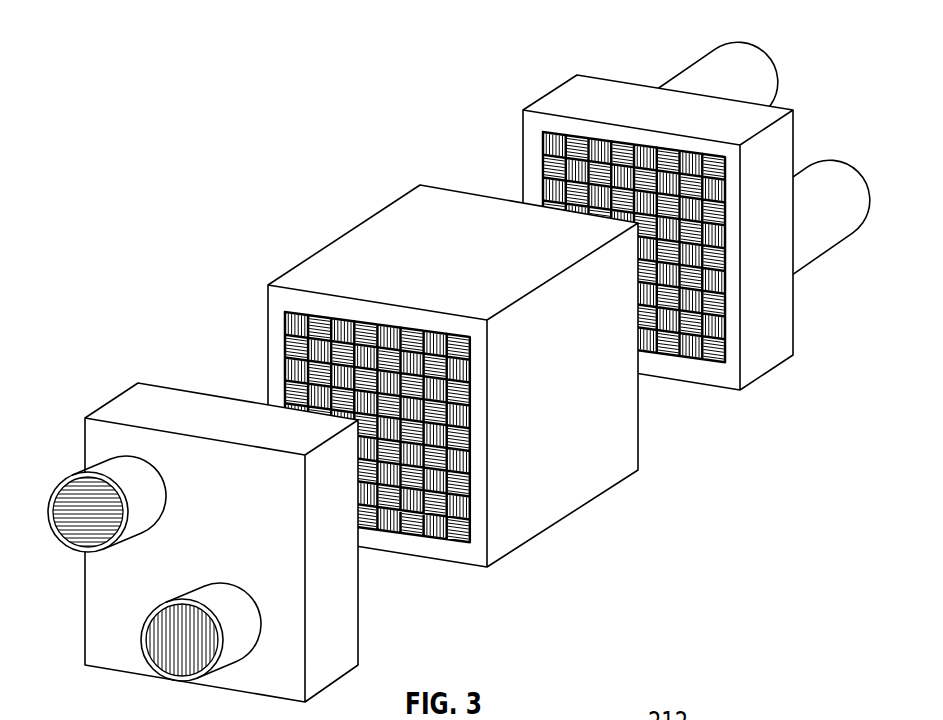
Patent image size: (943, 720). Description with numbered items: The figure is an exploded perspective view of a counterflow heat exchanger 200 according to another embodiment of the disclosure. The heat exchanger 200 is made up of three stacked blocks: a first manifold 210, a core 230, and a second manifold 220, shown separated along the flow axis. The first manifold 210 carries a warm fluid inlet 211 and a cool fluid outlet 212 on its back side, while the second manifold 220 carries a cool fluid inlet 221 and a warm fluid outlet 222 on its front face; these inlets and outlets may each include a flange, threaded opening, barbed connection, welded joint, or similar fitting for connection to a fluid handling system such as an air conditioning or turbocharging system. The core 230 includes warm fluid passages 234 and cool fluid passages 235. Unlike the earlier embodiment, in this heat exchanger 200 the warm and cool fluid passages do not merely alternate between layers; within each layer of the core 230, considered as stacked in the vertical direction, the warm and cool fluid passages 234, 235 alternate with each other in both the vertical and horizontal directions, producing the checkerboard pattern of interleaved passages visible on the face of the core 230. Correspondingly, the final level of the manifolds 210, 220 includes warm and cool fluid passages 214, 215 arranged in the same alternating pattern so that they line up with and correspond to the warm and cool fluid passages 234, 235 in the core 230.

The counterflow heat exchanger 200 is at (289, 173).
The first manifold 210 is at (568, 97).
The warm fluid inlet 211 is at (827, 160).
The cool fluid outlet 212 is at (747, 42).
The warm fluid passages 214 is at (725, 298).
The cool fluid passages 215 is at (652, 148).
The second manifold 220 is at (127, 402).
The cool fluid inlet 221 is at (88, 567).
The warm fluid outlet 222 is at (153, 668).
The core 230 is at (340, 250).
The warm fluid passages 234 is at (470, 480).
The cool fluid passages 235 is at (382, 325).